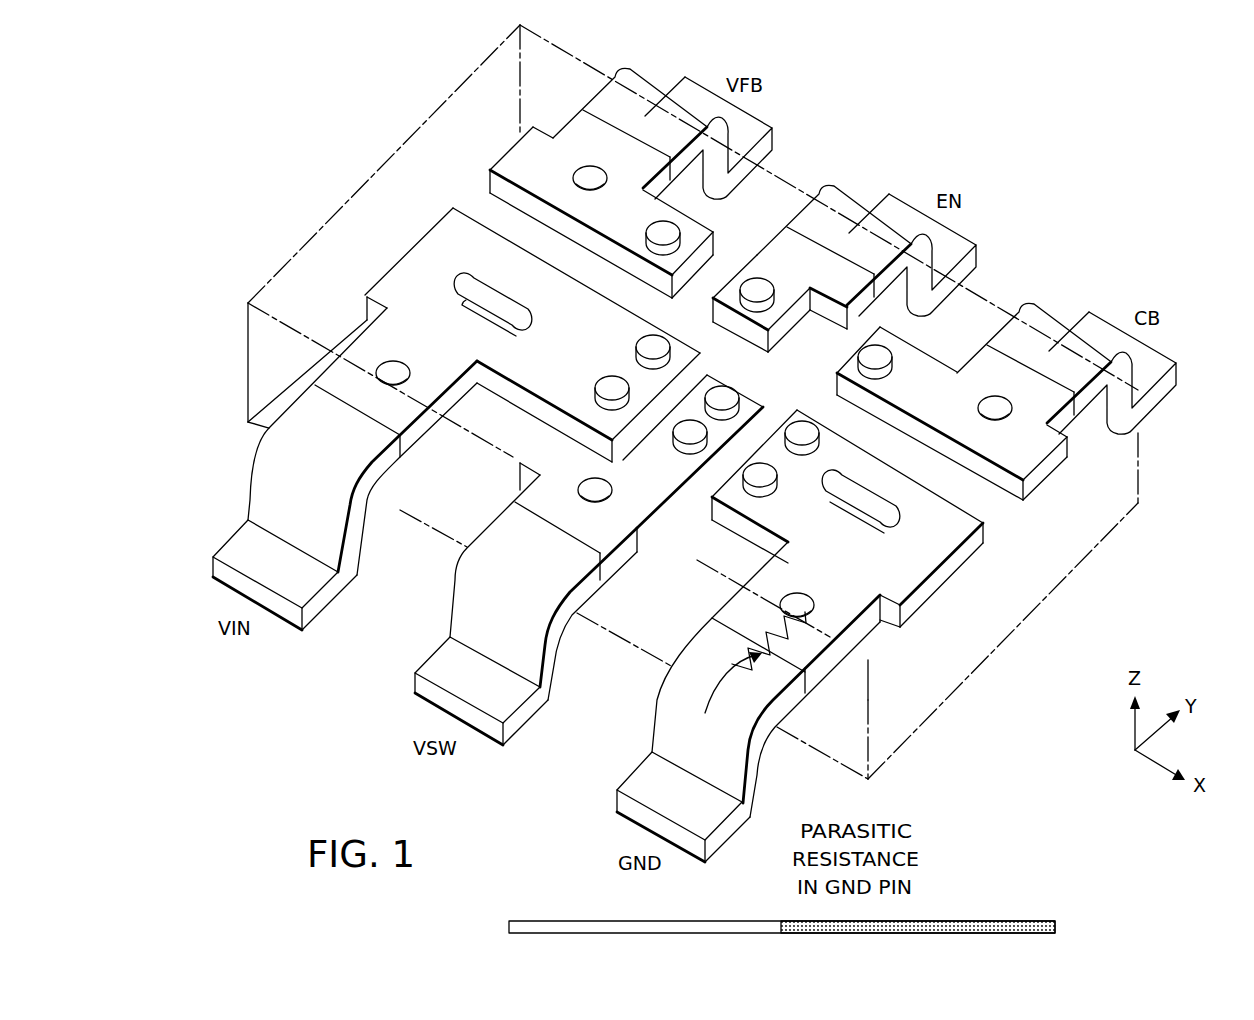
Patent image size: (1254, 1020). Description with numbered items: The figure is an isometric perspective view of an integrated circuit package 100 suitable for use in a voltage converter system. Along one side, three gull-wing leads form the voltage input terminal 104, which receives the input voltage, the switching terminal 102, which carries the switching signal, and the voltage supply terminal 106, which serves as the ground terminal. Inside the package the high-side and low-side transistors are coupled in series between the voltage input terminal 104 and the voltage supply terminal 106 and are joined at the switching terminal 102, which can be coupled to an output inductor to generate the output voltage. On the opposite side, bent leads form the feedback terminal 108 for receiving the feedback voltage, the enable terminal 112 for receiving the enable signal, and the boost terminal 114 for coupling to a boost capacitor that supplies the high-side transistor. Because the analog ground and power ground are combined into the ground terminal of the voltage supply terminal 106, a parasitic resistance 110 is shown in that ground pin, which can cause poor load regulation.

The integrated circuit package 100 is at (924, 80).
The switching terminal 102 is at (434, 652).
The voltage input terminal 104 is at (232, 533).
The voltage supply terminal 106 is at (636, 768).
The feedback terminal 108 is at (773, 135).
The parasitic resistance 110 is at (762, 658).
The enable terminal 112 is at (977, 253).
The boost terminal 114 is at (1179, 366).